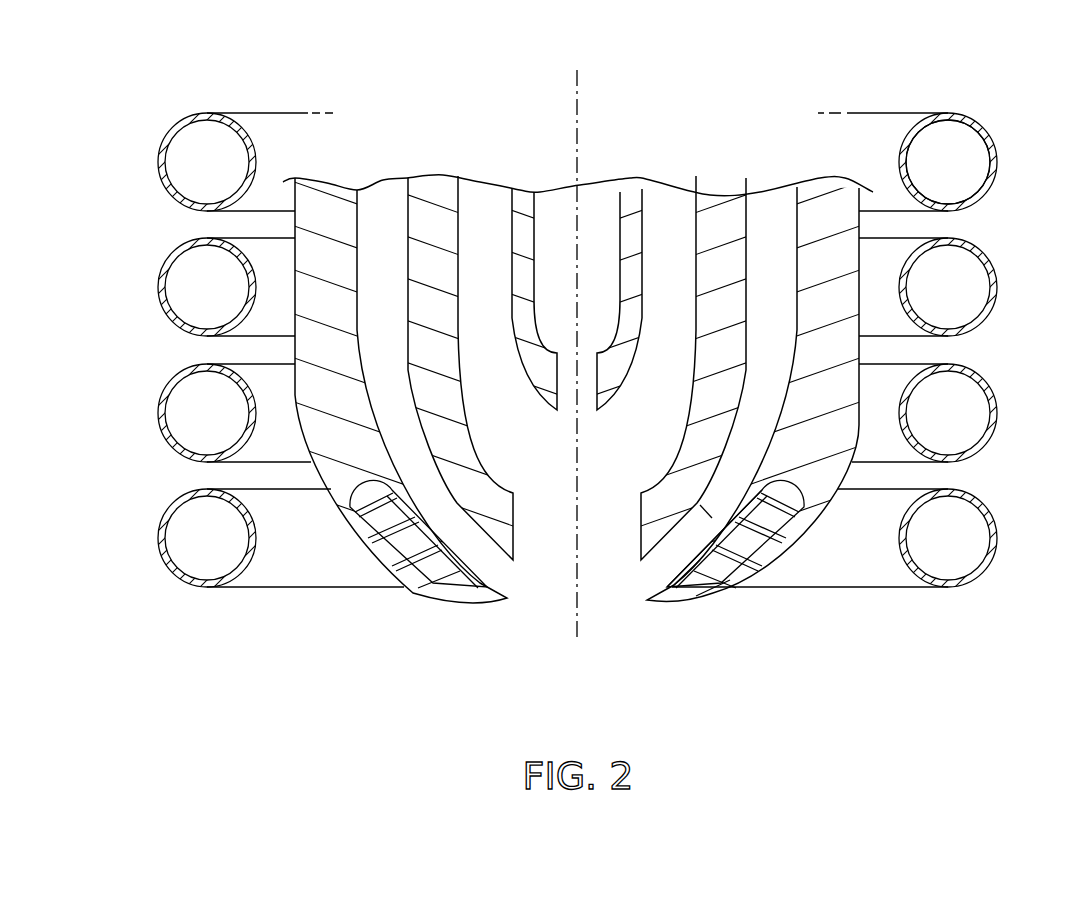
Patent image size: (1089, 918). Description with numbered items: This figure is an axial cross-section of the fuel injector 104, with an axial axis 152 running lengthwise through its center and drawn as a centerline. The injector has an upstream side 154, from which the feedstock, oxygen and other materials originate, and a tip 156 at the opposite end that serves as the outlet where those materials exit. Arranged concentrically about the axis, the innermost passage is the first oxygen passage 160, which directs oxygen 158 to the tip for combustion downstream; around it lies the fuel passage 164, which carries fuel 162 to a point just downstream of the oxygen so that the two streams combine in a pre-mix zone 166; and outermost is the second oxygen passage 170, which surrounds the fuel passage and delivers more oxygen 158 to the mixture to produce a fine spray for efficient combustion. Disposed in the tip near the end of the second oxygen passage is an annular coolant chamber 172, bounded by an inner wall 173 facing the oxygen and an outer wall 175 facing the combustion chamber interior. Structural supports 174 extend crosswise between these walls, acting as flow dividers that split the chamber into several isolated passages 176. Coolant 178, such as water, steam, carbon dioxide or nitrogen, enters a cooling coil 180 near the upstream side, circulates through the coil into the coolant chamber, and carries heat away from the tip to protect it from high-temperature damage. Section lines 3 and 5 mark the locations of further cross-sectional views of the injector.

The section line 3- 3 is at (1037, 693).
The section line 5- 5 is at (632, 567).
The fuel injector 104 is at (774, 84).
The axial axis 152 is at (580, 122).
The upstream side 154 is at (538, 99).
The tip 156 is at (541, 630).
The oxygen 158 is at (595, 212).
The first oxygen passage 160 is at (525, 197).
The fuel 162 is at (670, 224).
The fuel passage 164 is at (437, 182).
The pre-mix zone 166 is at (552, 478).
The second oxygen passage 170 is at (328, 202).
The coolant chamber 172 is at (745, 545).
The inner wall 173 is at (712, 522).
The structural supports 174 is at (757, 545).
The outer wall 175 is at (710, 600).
The passages 176 is at (689, 582).
The coolant 178 is at (958, 150).
The cooling coil 180 is at (992, 157).